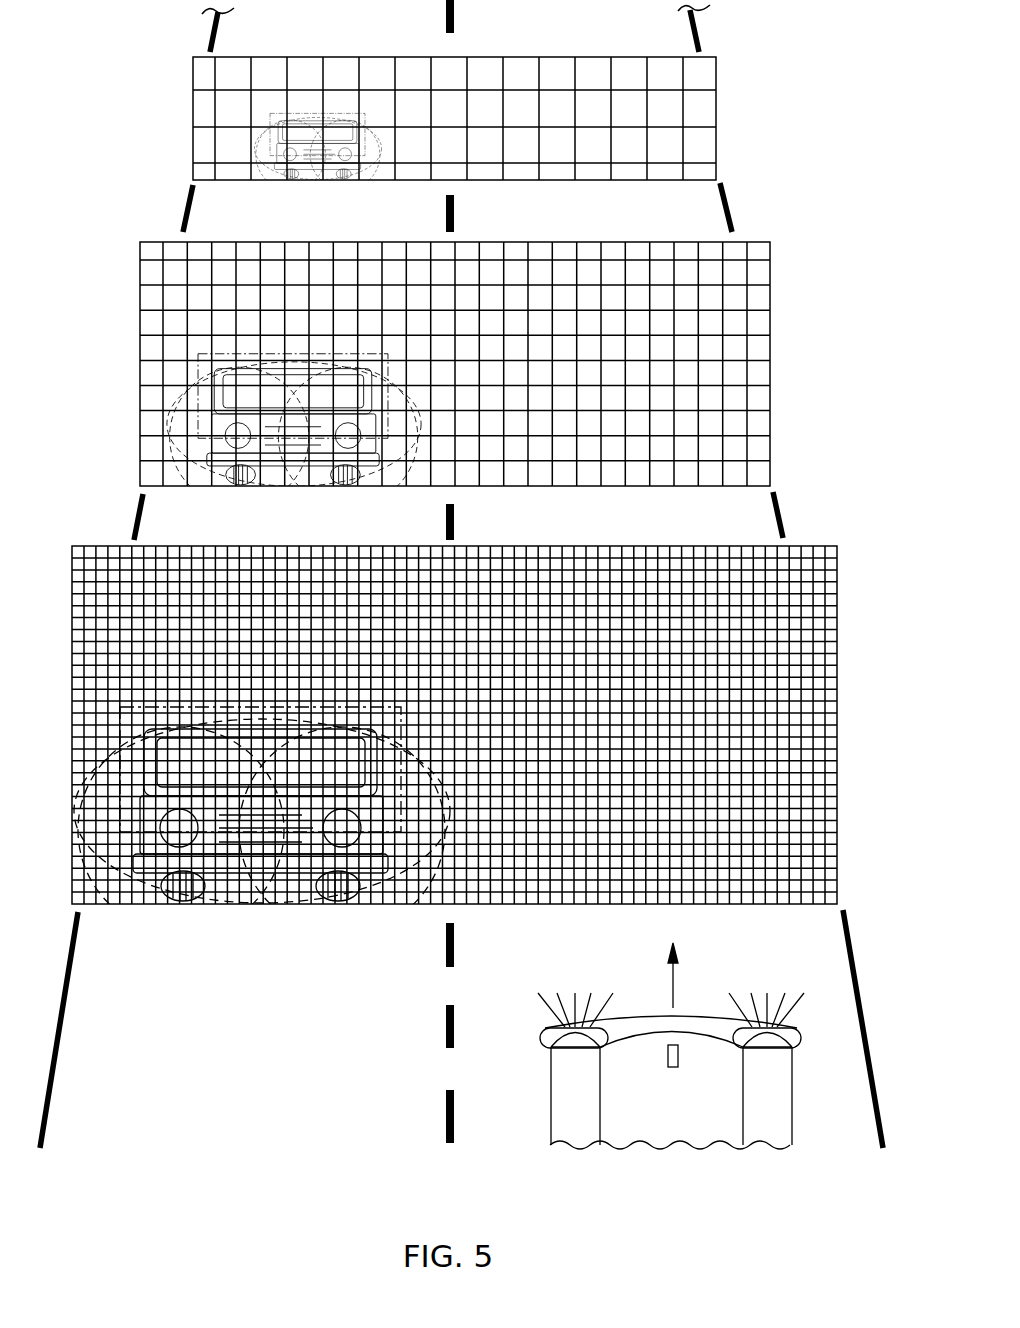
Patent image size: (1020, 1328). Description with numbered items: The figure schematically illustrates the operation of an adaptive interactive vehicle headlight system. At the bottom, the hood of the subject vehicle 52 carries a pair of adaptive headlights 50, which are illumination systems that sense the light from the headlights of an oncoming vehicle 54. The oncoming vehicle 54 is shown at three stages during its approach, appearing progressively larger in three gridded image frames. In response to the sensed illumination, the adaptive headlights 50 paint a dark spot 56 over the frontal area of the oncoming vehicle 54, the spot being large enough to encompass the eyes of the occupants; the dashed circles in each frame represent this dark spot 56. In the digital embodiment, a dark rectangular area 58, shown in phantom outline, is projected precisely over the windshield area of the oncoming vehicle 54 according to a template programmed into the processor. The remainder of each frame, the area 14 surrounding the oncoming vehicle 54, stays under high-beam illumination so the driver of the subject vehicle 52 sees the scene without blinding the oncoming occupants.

The area surrounding the oncoming vehicle 14 is at (877, 690).
The adaptive headlights 50 is at (772, 1036).
The subject vehicle 52 is at (679, 1130).
The oncoming vehicle 54 is at (295, 938).
The dark spot 56 is at (395, 934).
The dark rectangular area 58 is at (84, 778).